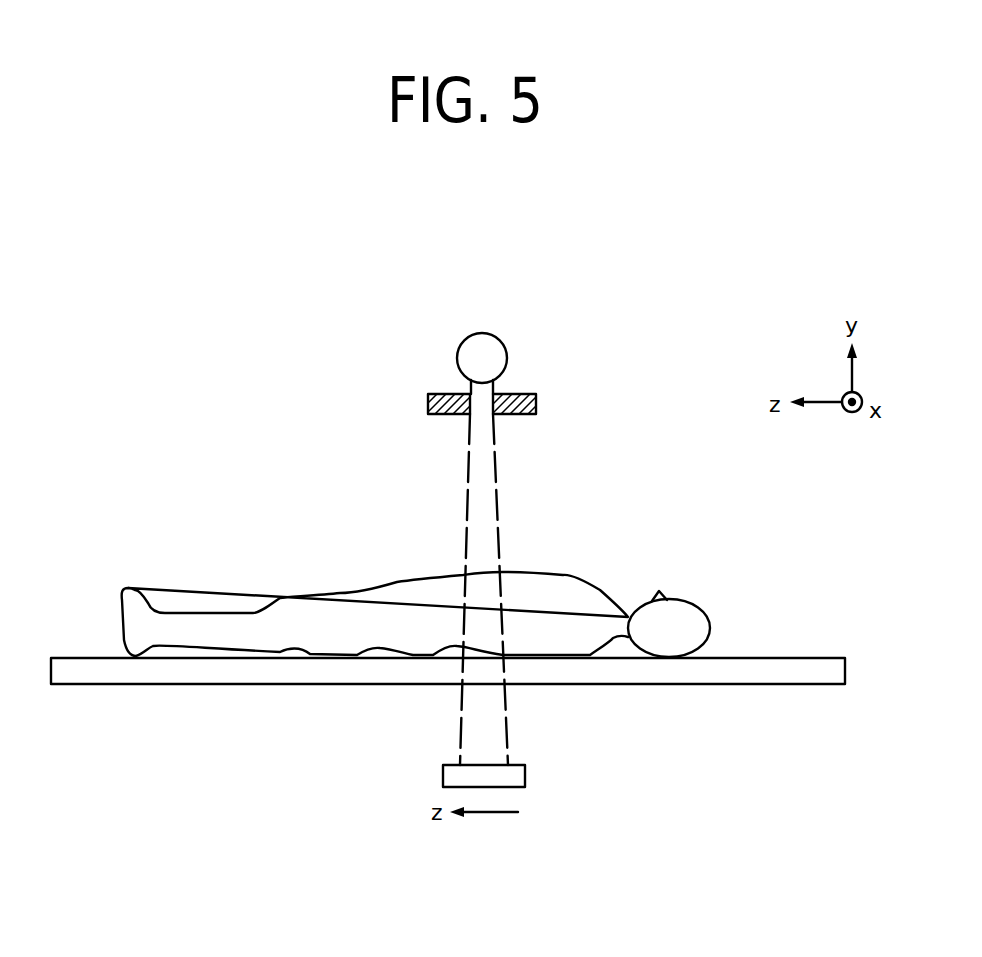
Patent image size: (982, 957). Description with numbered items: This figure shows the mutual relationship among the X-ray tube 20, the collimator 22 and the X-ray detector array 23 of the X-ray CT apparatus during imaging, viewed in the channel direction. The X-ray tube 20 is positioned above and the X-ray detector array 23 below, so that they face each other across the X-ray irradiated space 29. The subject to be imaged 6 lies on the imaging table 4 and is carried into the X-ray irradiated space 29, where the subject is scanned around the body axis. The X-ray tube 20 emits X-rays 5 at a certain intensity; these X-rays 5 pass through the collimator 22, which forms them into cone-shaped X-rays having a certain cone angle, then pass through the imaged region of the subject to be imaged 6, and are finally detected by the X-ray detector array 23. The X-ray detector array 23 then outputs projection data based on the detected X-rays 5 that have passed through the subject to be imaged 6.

The X-ray tube 20 is at (480, 332).
The collimator 22 is at (527, 394).
The X-rays 5 is at (497, 478).
The X-ray irradiated space 29 is at (448, 546).
The subject to be imaged 6 is at (690, 600).
The imaging table 4 is at (798, 684).
The X-ray detector array 23 is at (525, 770).